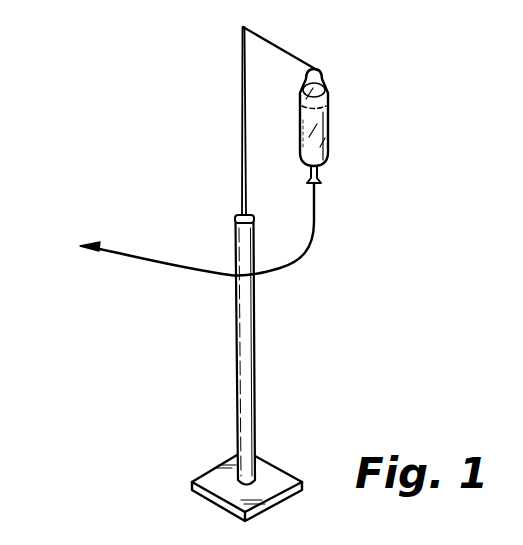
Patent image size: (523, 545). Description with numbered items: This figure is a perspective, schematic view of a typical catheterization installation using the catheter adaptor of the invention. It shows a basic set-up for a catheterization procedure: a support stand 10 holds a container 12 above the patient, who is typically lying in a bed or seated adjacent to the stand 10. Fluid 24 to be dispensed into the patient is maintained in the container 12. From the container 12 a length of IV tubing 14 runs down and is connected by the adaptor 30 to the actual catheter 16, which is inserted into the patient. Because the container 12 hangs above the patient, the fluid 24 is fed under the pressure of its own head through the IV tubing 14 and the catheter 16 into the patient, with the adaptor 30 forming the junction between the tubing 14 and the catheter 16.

The support stand 10 is at (245, 410).
The container 12 is at (325, 97).
The IV tubing 14 is at (307, 245).
The catheter 16 is at (82, 250).
The fluid 24 is at (325, 141).
The adaptor 30 is at (100, 245).